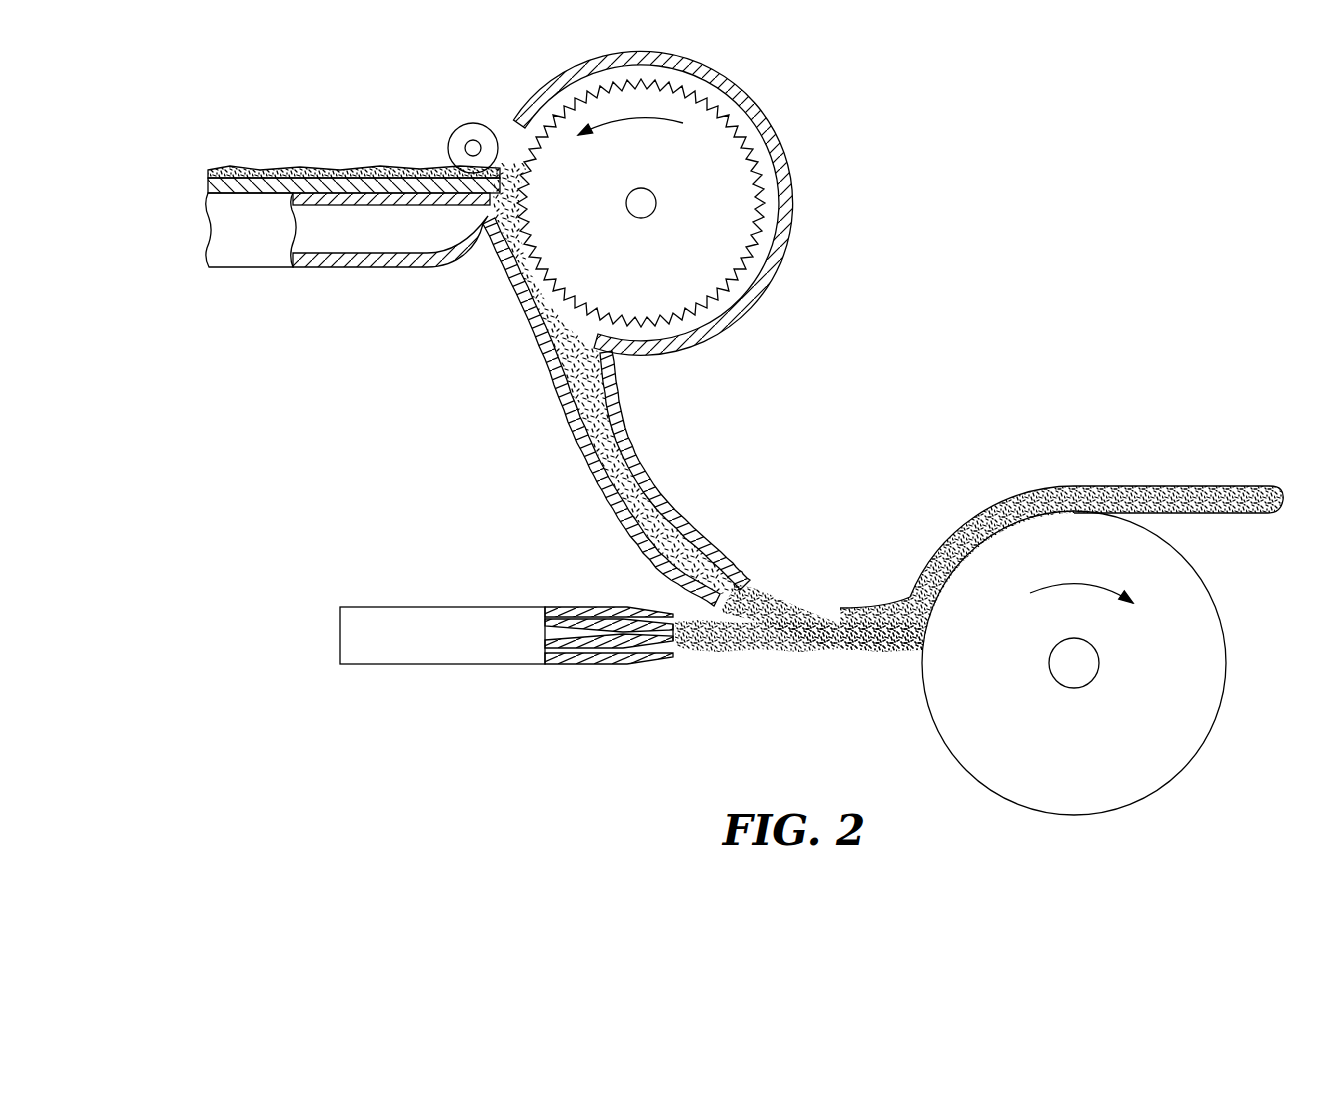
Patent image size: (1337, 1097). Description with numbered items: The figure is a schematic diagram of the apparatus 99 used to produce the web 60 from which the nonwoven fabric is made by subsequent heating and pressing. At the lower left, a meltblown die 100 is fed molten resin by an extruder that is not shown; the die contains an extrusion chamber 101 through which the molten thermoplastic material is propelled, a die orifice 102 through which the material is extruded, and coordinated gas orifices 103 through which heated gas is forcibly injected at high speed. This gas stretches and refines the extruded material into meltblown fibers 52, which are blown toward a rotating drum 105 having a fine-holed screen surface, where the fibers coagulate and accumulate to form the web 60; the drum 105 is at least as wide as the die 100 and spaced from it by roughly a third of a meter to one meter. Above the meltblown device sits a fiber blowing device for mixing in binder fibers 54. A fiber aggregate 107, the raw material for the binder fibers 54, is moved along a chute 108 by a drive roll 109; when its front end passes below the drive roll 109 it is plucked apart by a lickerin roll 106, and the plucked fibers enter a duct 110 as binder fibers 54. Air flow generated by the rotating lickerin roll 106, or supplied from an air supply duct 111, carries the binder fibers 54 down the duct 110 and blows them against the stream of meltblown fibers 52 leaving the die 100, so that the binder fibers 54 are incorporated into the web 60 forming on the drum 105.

The fiber web forming apparatus 99 is at (1035, 268).
The meltblown fibers 52 is at (737, 648).
The binder fibers 54 is at (778, 608).
The web 60 is at (1208, 495).
The meltblown die 100 is at (413, 590).
The extrusion chamber 101 is at (583, 637).
The die orifice 102 is at (678, 650).
The gas orifices 103 is at (638, 667).
The drum 105 is at (1215, 682).
The lickerin roll 106 is at (740, 220).
The fiber aggregate 107 is at (390, 170).
The chute 108 is at (264, 182).
The drive roll 109 is at (472, 135).
The duct 110 is at (558, 352).
The air supply duct 111 is at (356, 250).